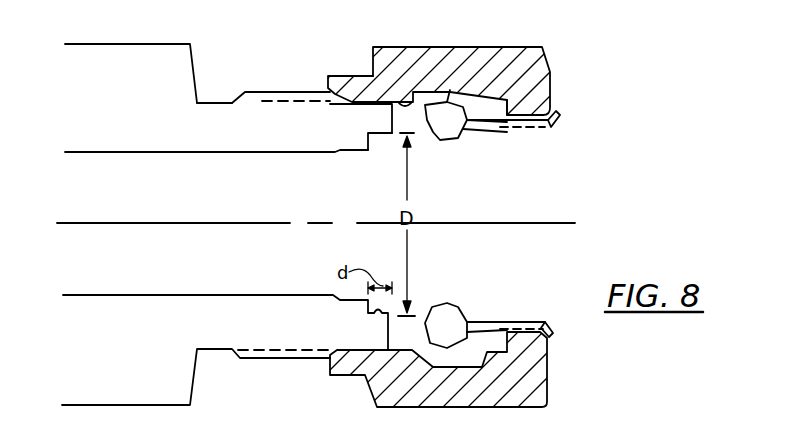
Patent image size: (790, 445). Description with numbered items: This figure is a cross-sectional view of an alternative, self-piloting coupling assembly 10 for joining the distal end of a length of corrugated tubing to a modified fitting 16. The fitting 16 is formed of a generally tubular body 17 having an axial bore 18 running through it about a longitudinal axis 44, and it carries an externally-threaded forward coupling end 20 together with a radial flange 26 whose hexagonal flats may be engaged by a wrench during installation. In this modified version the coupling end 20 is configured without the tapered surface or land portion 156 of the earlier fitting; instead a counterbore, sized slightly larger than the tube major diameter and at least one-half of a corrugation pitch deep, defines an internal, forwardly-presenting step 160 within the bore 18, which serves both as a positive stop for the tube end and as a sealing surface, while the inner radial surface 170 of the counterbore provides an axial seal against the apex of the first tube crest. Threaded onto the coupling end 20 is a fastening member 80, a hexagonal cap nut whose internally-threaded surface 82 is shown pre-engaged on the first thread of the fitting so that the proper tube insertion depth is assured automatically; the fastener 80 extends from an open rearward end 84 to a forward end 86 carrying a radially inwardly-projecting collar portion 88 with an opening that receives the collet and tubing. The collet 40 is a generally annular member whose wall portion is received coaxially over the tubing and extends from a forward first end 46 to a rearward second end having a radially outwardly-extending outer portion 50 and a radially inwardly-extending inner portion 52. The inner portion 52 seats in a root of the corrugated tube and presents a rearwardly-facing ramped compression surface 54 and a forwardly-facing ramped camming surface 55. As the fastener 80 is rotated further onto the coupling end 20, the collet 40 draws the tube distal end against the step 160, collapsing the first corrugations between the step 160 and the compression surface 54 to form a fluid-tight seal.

The radial flange 26 is at (133, 44).
The fitting 16 is at (267, 43).
The tubular body 17 is at (212, 103).
The forward coupling end 20 is at (257, 97).
The axial bore 18 is at (125, 199).
The internal step 160 is at (372, 152).
The land portion 156 is at (383, 146).
The fastening member 80 is at (450, 63).
The outer portion 50 is at (472, 75).
The open rearward end 84 is at (328, 77).
The internally-threaded surface 82 is at (403, 103).
The forward end 86 is at (550, 76).
The inner portion 52 is at (455, 141).
The camming surface 55 is at (462, 136).
The collar portion 88 is at (548, 106).
The first end 46 is at (557, 126).
The coupling assembly 10 is at (642, 70).
The collet member 40 is at (605, 110).
The compression surface 54 is at (419, 166).
The longitudinal axis 44 is at (577, 222).
The inner radial surface 170 is at (380, 314).